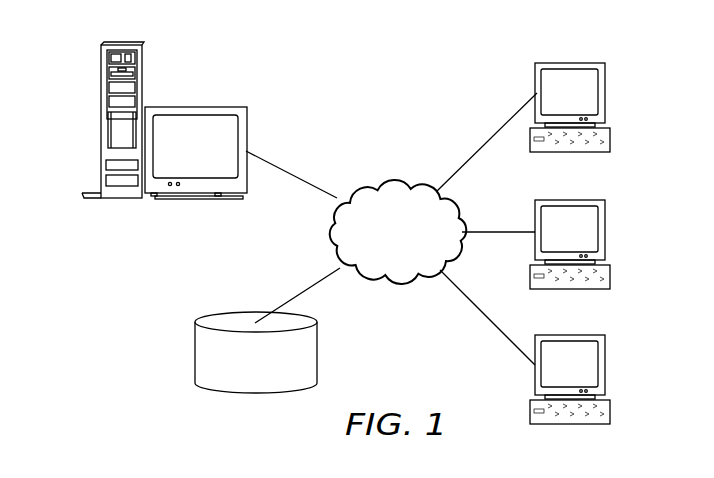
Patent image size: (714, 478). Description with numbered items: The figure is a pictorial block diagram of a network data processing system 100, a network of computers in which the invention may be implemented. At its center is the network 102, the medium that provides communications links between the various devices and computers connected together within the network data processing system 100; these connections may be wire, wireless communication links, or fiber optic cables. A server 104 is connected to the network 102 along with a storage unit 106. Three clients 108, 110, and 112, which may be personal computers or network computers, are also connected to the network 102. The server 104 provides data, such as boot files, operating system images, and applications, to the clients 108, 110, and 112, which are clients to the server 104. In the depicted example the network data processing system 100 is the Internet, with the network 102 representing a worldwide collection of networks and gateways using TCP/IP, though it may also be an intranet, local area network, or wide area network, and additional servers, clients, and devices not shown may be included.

The network data processing system 100 is at (444, 75).
The network 102 is at (370, 185).
The server 104 is at (100, 123).
The storage unit 106 is at (195, 352).
The client 108 is at (607, 93).
The client 110 is at (607, 232).
The client 112 is at (606, 366).